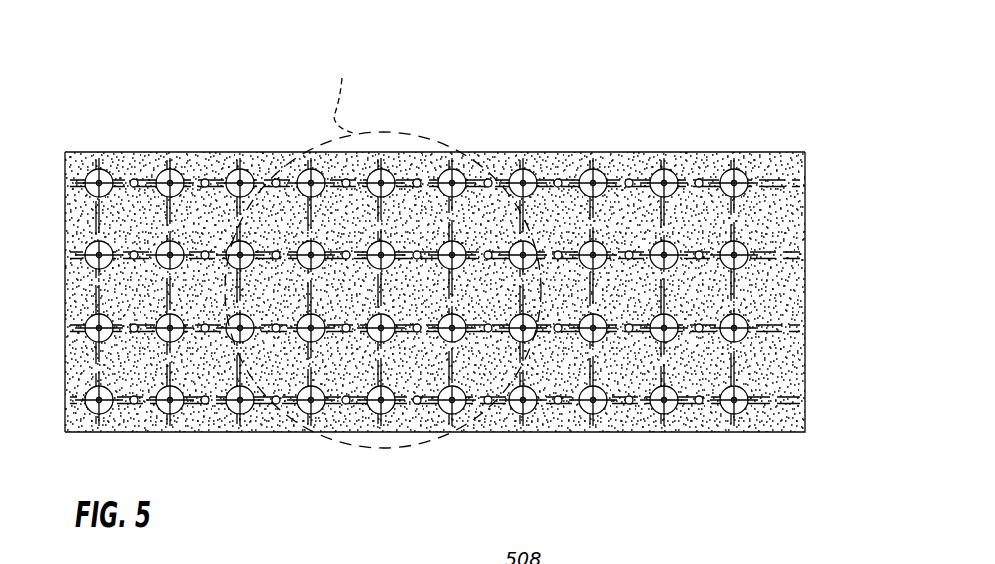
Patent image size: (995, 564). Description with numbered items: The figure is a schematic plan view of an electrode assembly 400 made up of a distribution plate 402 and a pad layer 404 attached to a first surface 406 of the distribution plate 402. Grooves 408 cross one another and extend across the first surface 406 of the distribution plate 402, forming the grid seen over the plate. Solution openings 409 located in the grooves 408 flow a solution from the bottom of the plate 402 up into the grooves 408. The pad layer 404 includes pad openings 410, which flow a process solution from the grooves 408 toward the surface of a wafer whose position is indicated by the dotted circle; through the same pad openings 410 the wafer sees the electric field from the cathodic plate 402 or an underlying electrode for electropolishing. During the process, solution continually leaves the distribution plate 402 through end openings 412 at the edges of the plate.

The assembly 400 is at (646, 119).
The distribution plate 402 is at (806, 216).
The pad layer 404 is at (766, 152).
The first surface 406 is at (748, 390).
The grooves 408 is at (535, 166).
The solution openings 409 is at (585, 158).
The pad openings 410 is at (746, 316).
The end openings 412 is at (812, 404).